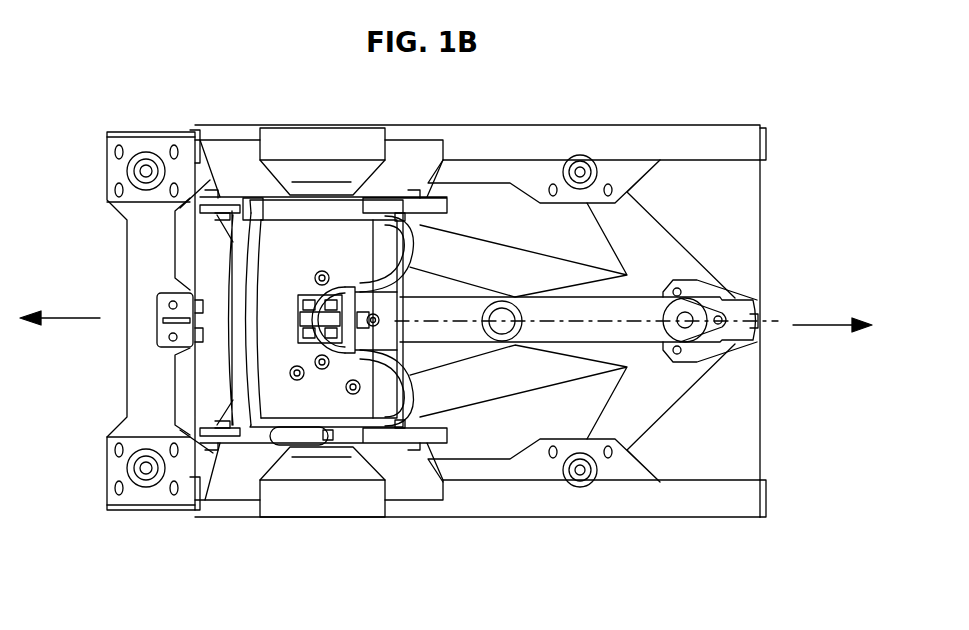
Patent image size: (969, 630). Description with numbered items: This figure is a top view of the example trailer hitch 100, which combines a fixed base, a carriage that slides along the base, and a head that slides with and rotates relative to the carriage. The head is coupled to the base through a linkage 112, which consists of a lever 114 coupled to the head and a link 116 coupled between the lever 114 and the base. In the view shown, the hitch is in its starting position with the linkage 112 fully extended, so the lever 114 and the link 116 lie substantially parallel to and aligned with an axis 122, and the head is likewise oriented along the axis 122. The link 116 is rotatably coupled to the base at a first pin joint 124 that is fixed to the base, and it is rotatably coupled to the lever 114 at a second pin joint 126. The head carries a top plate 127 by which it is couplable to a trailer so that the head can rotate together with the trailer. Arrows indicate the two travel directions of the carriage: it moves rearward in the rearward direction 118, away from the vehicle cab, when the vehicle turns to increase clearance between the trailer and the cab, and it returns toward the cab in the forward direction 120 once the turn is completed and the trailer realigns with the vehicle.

The trailer hitch 100 is at (138, 42).
The linkage 112 is at (556, 285).
The lever 114 is at (450, 348).
The link 116 is at (690, 345).
The rearward direction 118 is at (835, 325).
The forward direction 120 is at (57, 318).
The axis 122 is at (632, 318).
The first pin joint 124 is at (687, 330).
The second pin joint 126 is at (508, 326).
The top plate 127 is at (333, 222).